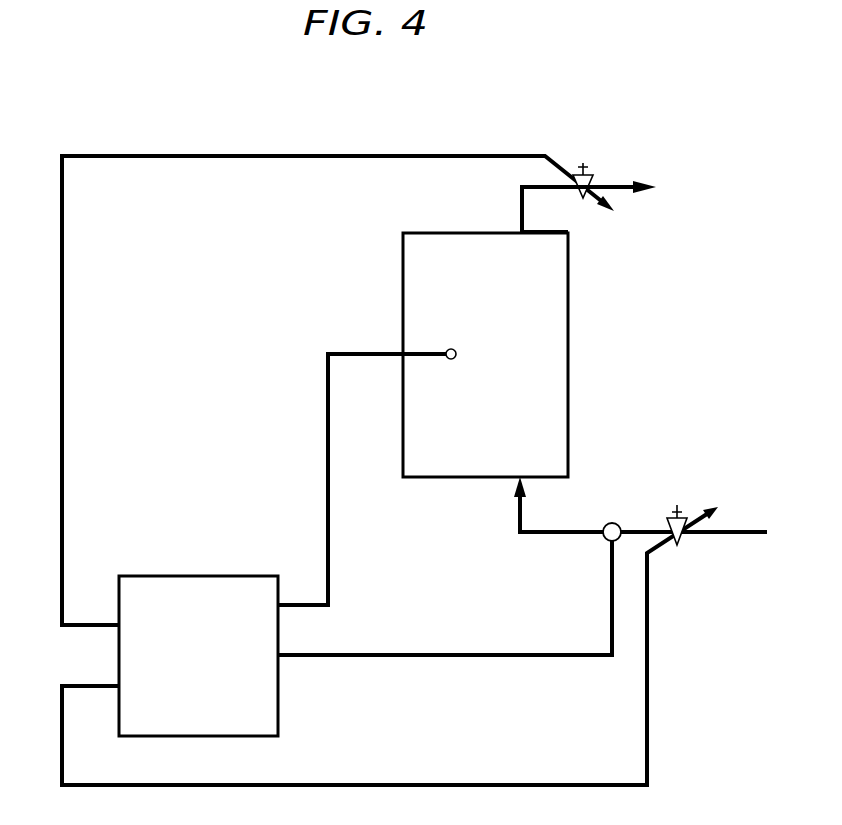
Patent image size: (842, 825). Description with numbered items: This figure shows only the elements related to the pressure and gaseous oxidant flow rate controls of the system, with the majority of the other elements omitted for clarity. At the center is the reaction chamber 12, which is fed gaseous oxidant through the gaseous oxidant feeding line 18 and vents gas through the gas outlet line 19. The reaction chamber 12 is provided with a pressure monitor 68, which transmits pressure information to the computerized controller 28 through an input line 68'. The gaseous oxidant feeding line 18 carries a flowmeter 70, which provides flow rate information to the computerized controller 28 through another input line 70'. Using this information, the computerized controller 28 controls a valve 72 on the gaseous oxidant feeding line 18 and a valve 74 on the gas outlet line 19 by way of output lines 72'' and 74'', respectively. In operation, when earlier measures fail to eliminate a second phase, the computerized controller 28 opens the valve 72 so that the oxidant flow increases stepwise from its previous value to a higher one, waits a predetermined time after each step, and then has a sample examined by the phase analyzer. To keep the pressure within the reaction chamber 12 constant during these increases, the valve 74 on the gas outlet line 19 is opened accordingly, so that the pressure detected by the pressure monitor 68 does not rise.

The reaction chamber 12 is at (568, 302).
The gaseous oxidant feeding line 18 is at (735, 532).
The gas outlet line 19 is at (617, 185).
The computerized controller 28 is at (180, 576).
The pressure monitor 68 is at (469, 320).
The input line 68' is at (340, 479).
The flowmeter 70 is at (609, 494).
The input line 70' is at (445, 598).
The valve 72 is at (678, 485).
The output line 72'' is at (390, 646).
The valve 74 is at (574, 139).
The output line 74'' is at (338, 355).